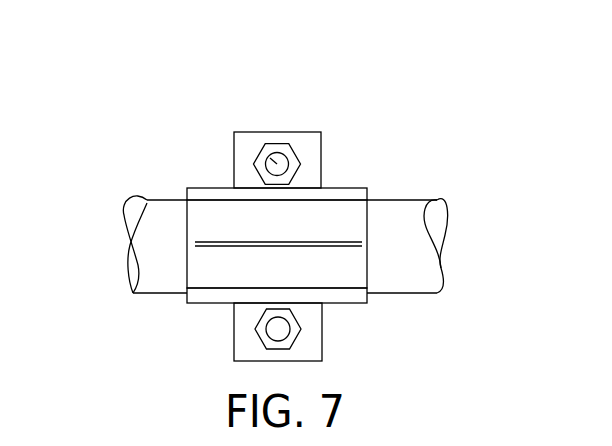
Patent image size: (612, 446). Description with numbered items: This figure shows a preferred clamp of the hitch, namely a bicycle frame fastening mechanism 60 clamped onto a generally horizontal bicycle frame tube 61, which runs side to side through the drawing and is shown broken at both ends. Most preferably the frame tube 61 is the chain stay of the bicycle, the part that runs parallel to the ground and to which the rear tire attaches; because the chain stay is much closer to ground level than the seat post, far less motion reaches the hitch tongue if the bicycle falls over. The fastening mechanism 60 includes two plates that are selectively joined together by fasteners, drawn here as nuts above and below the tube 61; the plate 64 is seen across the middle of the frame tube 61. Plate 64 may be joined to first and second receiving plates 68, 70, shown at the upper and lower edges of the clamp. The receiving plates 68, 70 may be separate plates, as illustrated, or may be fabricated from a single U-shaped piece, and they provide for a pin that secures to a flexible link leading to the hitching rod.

The bicycle frame fastening mechanism 60 is at (157, 123).
The bicycle frame tube 61 is at (138, 278).
The second plate 64 is at (350, 222).
The first receiving plate 68 is at (188, 192).
The second receiving plate 70 is at (188, 302).